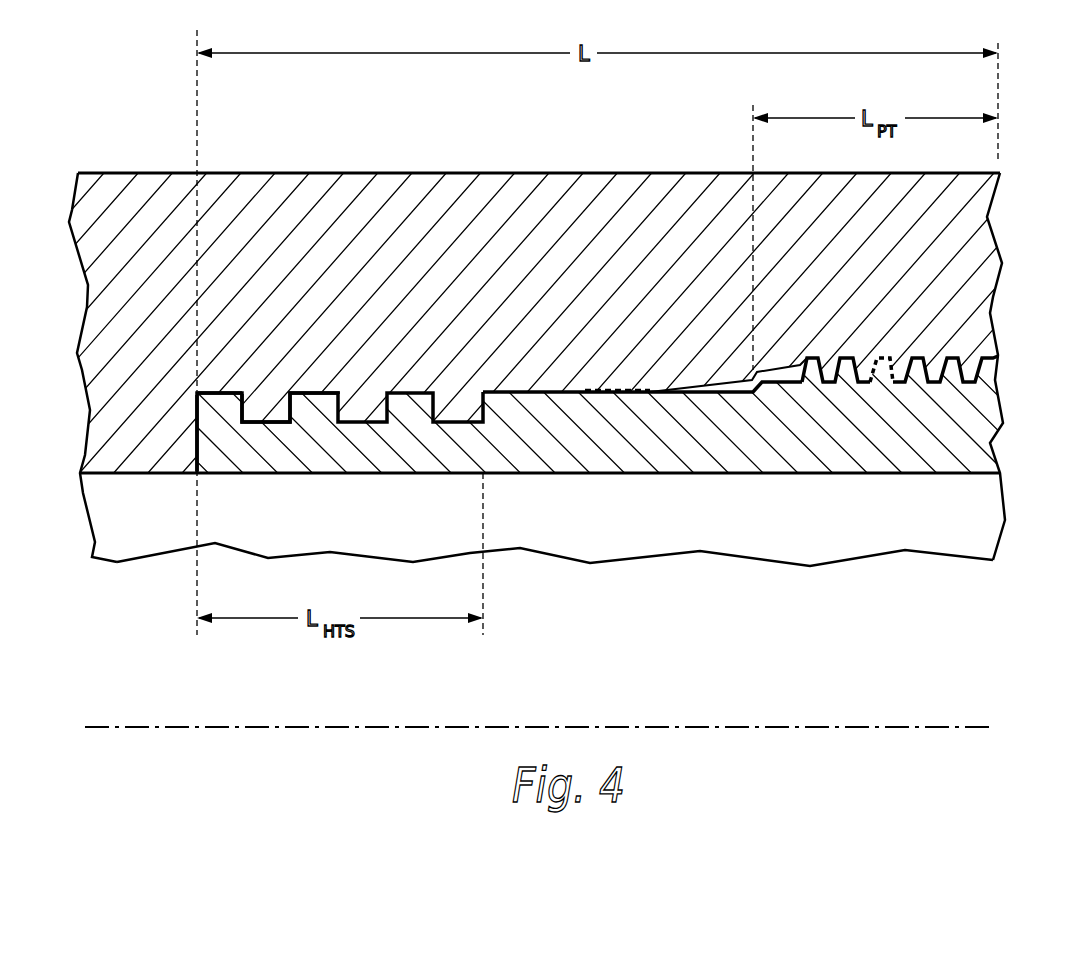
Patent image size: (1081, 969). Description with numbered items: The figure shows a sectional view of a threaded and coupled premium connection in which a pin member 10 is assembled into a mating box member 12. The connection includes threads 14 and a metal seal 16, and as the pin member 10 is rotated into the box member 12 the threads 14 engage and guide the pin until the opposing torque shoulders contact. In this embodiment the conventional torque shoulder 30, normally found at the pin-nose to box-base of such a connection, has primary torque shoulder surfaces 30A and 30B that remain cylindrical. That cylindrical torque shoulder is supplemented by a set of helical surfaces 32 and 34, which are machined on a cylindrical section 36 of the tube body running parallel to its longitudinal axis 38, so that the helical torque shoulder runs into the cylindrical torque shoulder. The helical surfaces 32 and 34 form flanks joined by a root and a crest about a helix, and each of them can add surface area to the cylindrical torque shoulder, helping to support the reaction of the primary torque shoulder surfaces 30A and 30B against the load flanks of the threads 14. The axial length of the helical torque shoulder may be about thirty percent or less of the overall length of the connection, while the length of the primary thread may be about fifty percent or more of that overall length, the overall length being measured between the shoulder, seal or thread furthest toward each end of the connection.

The pin member 10 is at (915, 441).
The box member 12 is at (480, 193).
The threads 14 is at (942, 350).
The metal seal 16 is at (620, 378).
The conventional torque shoulder 30 is at (193, 448).
The primary torque shoulder surface 30A is at (195, 433).
The primary torque shoulder surface 30B is at (222, 408).
The helical surface 32 is at (250, 398).
The helical surface 34 is at (285, 398).
The cylindrical section 36 is at (482, 270).
The longitudinal axis 38 is at (873, 727).